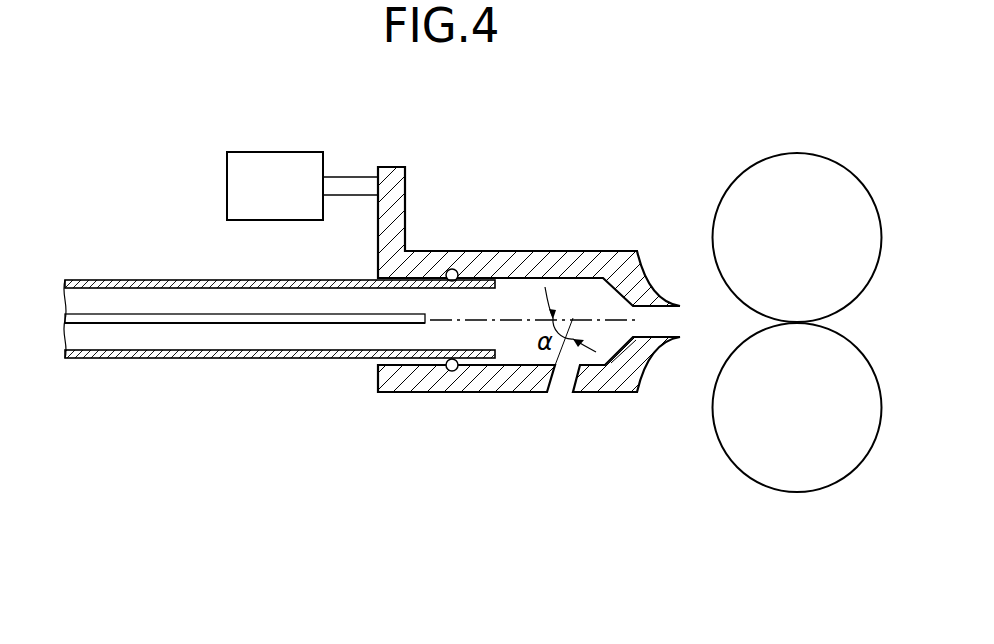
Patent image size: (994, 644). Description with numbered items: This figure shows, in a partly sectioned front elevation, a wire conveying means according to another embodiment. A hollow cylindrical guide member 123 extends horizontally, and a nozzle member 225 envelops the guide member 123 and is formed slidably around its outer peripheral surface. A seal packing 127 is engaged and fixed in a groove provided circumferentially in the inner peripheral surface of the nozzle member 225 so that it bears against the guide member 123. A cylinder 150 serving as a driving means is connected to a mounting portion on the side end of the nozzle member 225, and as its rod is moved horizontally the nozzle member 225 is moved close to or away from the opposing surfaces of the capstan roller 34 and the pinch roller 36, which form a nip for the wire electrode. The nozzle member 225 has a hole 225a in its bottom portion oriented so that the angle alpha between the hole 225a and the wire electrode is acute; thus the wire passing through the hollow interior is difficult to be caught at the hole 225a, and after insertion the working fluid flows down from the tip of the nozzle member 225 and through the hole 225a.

The capstan roller 34 is at (797, 152).
The pinch roller 36 is at (790, 493).
The hollow cylindrical guide member 123 is at (214, 359).
The seal packing 127 is at (452, 371).
The cylinder 150 is at (276, 151).
The nozzle member 225 is at (574, 251).
The hole 225a is at (561, 393).